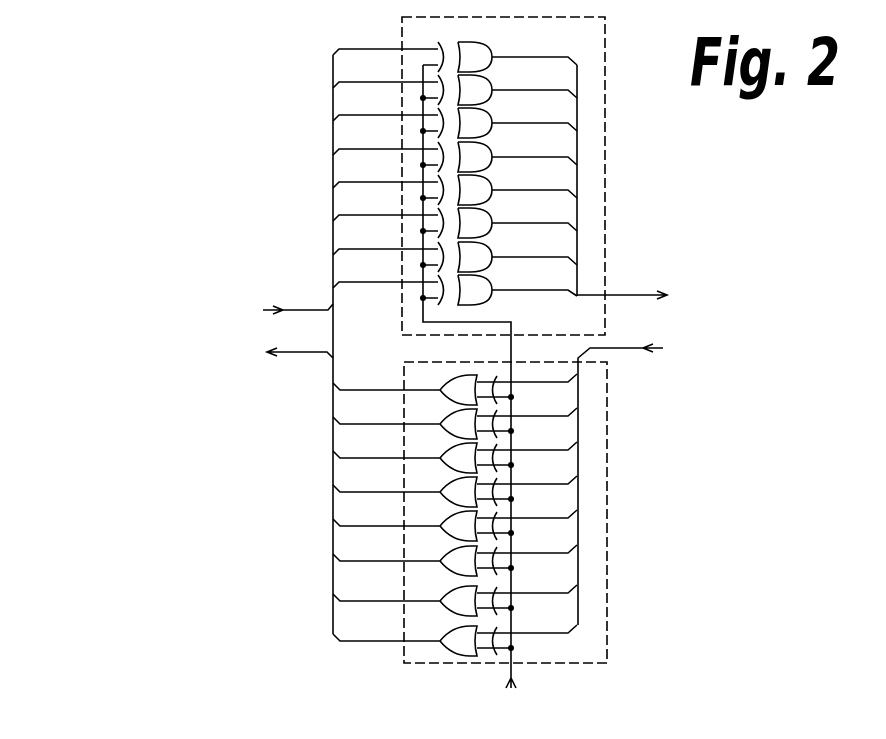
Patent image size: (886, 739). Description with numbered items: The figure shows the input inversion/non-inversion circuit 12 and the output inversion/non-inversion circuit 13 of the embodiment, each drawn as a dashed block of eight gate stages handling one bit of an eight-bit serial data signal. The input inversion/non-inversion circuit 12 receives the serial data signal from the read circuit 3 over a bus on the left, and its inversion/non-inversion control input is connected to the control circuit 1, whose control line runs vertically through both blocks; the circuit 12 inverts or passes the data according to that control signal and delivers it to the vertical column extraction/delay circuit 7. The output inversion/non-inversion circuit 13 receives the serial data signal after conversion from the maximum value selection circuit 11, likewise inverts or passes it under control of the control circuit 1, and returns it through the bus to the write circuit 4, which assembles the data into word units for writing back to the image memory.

The control circuit 1 is at (544, 390).
The read circuit 3 is at (225, 317).
The write circuit 4 is at (225, 366).
The vertical column extraction/delay circuit 7 is at (726, 296).
The maximum value selection circuit 11 is at (711, 484).
The input inversion/non-inversion circuit 12 is at (605, 118).
The output inversion/non-inversion circuit 13 is at (608, 592).